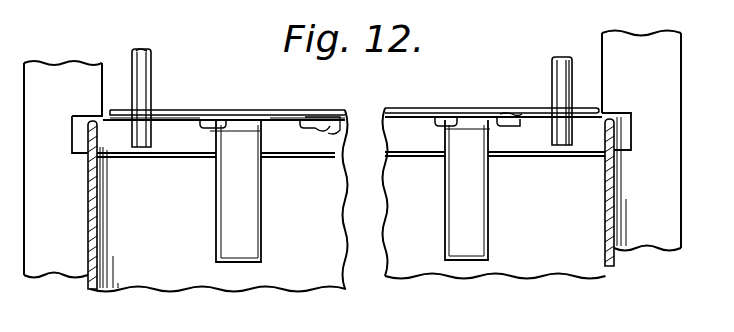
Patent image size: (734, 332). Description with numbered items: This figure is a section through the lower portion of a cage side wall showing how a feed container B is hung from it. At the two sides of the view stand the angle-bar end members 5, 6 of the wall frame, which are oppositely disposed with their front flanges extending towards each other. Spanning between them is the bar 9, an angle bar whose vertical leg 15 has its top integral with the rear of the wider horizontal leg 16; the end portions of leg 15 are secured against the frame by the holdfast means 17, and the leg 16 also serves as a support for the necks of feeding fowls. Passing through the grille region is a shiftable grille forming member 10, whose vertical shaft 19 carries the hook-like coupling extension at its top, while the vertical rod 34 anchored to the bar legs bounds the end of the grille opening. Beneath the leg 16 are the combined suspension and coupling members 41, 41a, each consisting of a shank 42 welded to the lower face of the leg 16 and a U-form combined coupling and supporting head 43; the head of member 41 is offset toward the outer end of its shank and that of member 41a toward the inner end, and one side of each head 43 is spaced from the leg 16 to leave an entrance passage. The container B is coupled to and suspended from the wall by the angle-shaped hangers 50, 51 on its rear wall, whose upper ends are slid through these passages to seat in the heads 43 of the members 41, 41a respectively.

The end member 5 is at (30, 143).
The end member 6 is at (666, 145).
The bar 9 is at (200, 96).
The shiftable grille forming member 10 is at (151, 72).
The vertical leg 15 is at (78, 124).
The horizontal leg 16 is at (236, 116).
The holdfast means 17 is at (653, 31).
The vertical shaft 19 is at (150, 53).
The vertical rod 34 is at (585, 24).
The combined suspension and coupling member 41 is at (352, 90).
The combined suspension and coupling member 41a is at (504, 116).
The shank 42 is at (308, 100).
The combined coupling and supporting head 43 is at (230, 130).
The angle-shaped hanger 50 is at (252, 191).
The angle-shaped hanger 51 is at (480, 198).
The container B is at (553, 264).